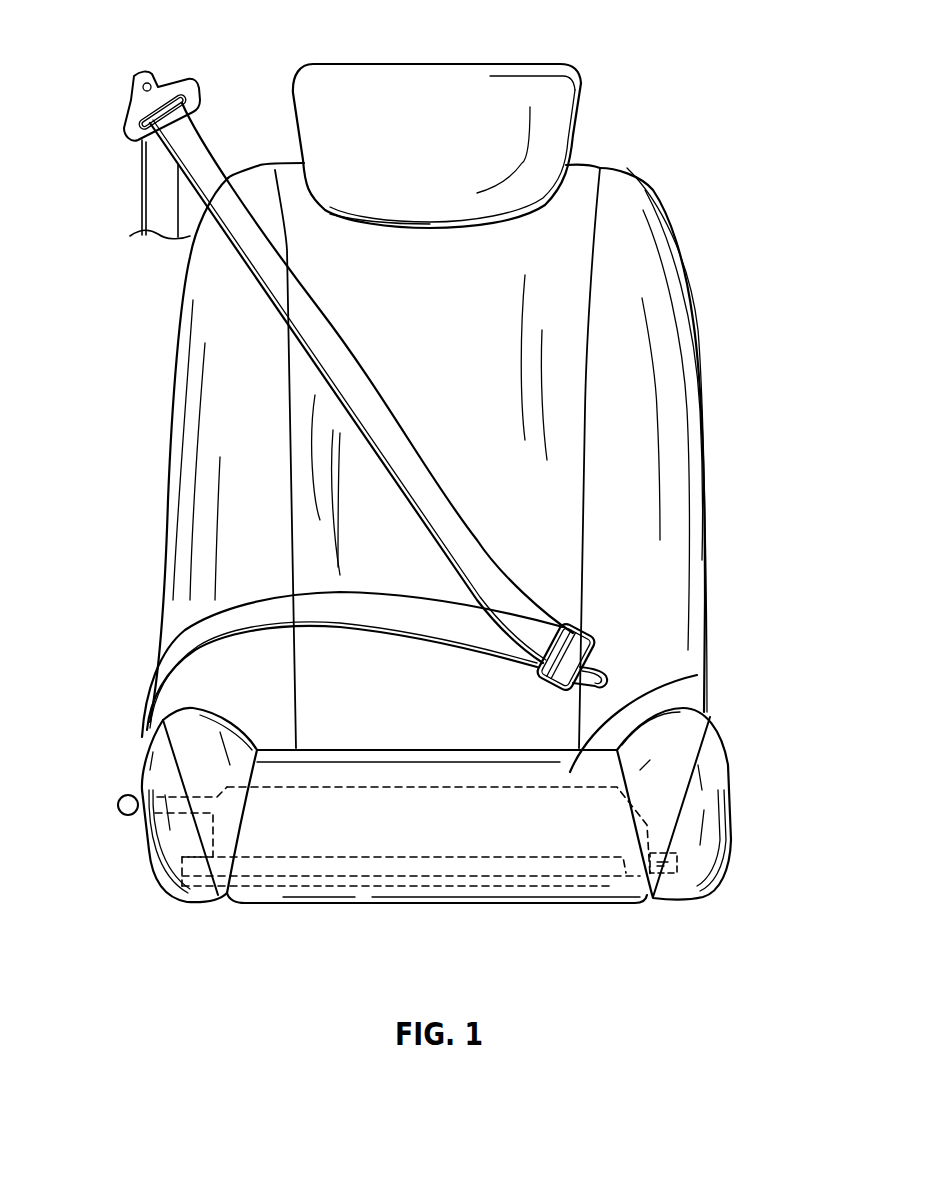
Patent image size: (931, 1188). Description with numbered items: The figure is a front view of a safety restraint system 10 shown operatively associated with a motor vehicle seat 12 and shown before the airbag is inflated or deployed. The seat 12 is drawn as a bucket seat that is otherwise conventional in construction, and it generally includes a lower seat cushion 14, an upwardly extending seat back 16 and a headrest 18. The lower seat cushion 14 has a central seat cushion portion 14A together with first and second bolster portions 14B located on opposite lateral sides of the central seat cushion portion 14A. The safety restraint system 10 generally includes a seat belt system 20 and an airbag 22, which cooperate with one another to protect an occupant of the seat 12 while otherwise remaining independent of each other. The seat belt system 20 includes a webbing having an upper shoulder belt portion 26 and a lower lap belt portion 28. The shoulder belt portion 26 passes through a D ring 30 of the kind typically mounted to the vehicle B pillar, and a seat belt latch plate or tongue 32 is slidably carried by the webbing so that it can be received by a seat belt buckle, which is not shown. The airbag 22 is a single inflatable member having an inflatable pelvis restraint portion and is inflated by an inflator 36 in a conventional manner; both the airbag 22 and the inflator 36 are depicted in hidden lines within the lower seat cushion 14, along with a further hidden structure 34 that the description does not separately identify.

The safety restraint system 10 is at (243, 923).
The seat 12 is at (682, 220).
The lower seat cushion 14 is at (434, 912).
The central seat cushion portion 14A is at (697, 675).
The first and second bolster portions 14B is at (138, 765).
The seat back 16 is at (590, 158).
The headrest 18 is at (440, 63).
The seat belt system 20 is at (146, 258).
The airbag 22 is at (620, 886).
The shoulder belt portion 26 is at (424, 452).
The lap belt portion 28 is at (337, 628).
The D ring 30 is at (180, 83).
The seat belt latch plate or tongue 32 is at (590, 638).
The seat frame structure 34 is at (532, 890).
The inflator 36 is at (126, 815).